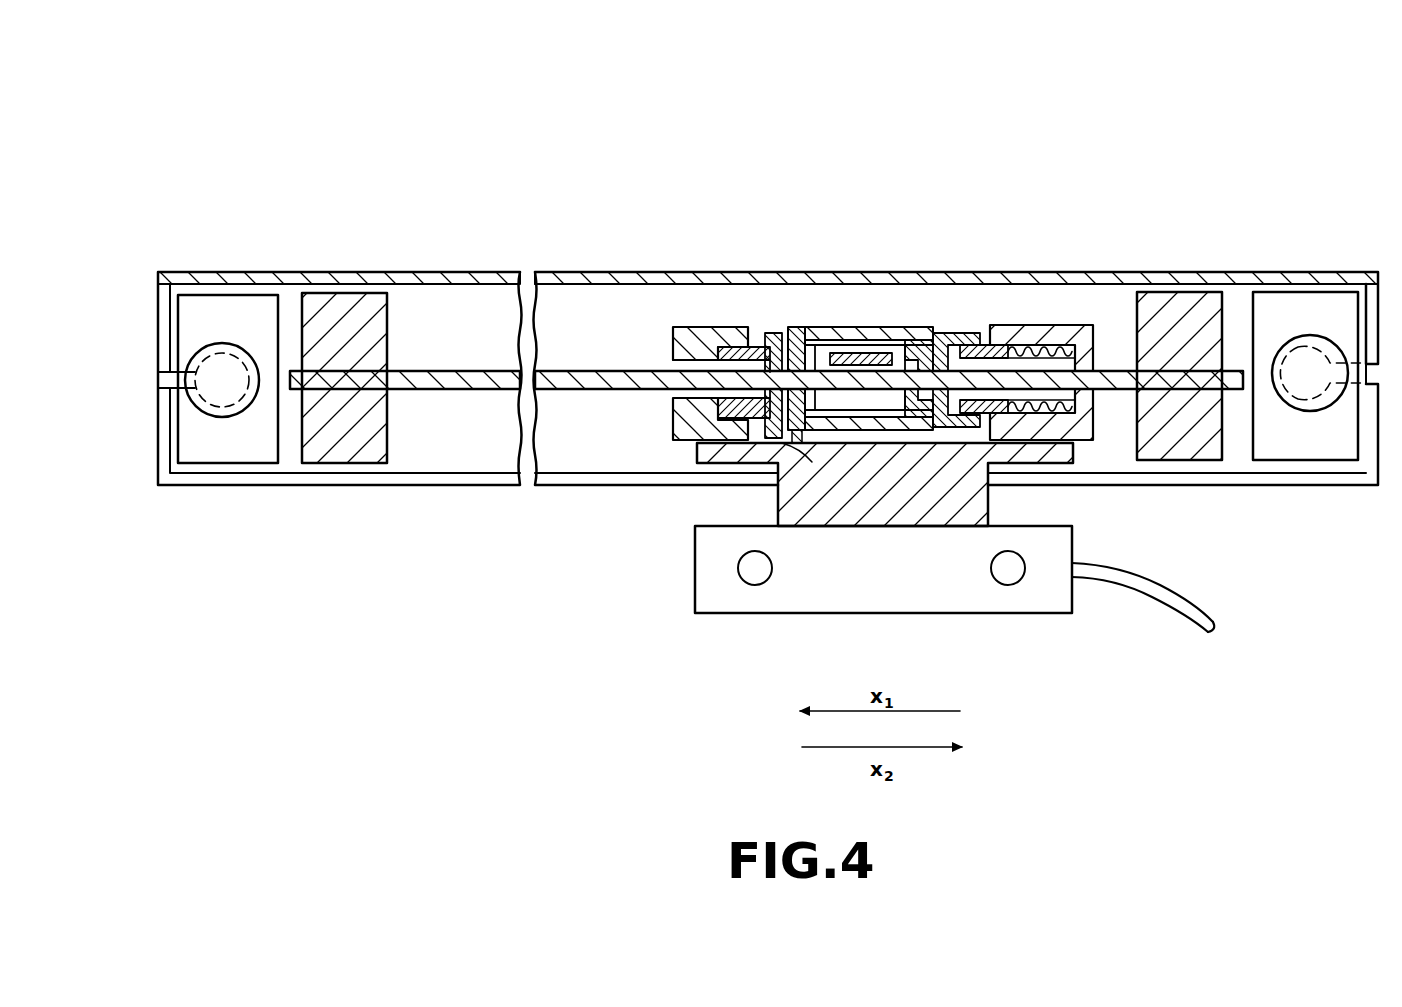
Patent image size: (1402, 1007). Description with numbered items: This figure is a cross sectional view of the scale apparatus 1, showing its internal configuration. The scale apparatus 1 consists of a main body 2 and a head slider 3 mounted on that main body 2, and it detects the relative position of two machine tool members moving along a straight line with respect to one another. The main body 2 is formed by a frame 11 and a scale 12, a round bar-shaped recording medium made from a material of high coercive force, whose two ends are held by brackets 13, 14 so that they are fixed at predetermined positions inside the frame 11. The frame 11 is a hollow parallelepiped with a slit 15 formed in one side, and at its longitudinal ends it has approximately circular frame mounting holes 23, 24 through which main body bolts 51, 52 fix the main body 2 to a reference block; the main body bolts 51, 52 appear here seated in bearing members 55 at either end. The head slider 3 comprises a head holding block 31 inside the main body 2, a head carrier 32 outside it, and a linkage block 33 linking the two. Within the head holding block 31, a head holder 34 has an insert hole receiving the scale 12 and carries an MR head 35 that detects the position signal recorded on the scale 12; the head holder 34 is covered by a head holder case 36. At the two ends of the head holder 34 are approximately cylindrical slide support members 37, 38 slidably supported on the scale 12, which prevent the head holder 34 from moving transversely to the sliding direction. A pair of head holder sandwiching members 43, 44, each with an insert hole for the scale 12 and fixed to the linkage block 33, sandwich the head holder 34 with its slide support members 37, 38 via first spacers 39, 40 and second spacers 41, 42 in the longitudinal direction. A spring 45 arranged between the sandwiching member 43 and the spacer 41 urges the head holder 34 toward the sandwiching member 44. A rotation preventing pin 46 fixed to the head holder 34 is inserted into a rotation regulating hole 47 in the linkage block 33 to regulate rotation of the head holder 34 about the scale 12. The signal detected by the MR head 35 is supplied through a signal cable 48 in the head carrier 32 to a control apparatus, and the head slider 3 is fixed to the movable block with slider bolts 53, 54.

The scale apparatus 1 is at (889, 135).
The main body 2 is at (1098, 270).
The head slider 3 is at (768, 618).
The frame 11 is at (1215, 272).
The scale 12 is at (450, 370).
The bracket 13 is at (1215, 293).
The bracket 14 is at (345, 293).
The slit 15 is at (445, 492).
The frame mounting hole 23 is at (1308, 345).
The frame mounting hole 24 is at (228, 345).
The head holding block 31 is at (655, 330).
The head carrier 32 is at (693, 592).
The linkage block 33 is at (778, 512).
The head holder 34 is at (928, 330).
The MR head 35 is at (868, 353).
The head holder case 36 is at (836, 327).
The slide support member 37 is at (940, 340).
The slide support member 38 is at (792, 327).
The first spacer 39 is at (970, 333).
The first spacer 40 is at (780, 345).
The second spacer 41 is at (1010, 333).
The second spacer 42 is at (758, 330).
The head holder sandwiching member 43 is at (1035, 325).
The head holder sandwiching member 44 is at (700, 327).
The spring 45 is at (1060, 330).
The rotation preventing pin 46 is at (792, 458).
The rotation regulating hole 47 is at (800, 453).
The signal cable 48 is at (1175, 605).
The main body bolt 51 is at (1305, 415).
The main body bolt 52 is at (238, 415).
The slider bolt 53 is at (1008, 585).
The slider bolt 54 is at (745, 583).
The bearing member 55 is at (208, 450).